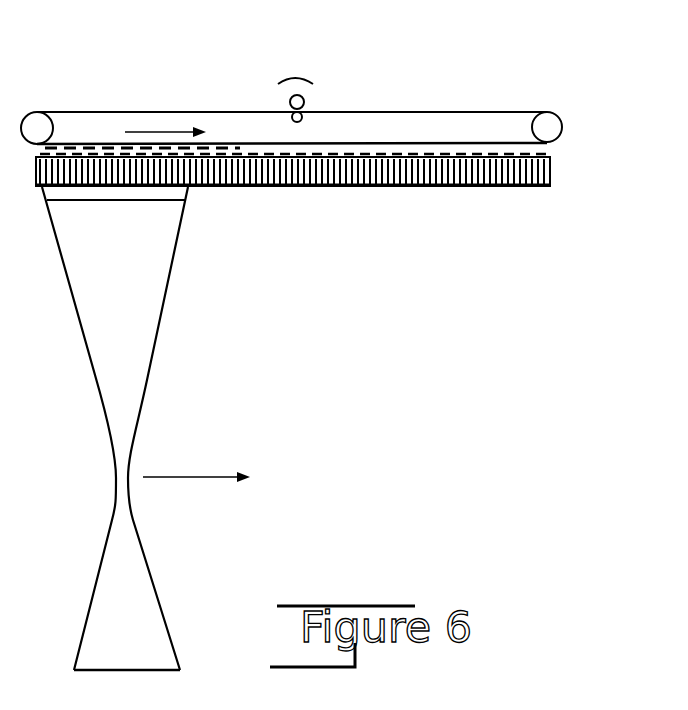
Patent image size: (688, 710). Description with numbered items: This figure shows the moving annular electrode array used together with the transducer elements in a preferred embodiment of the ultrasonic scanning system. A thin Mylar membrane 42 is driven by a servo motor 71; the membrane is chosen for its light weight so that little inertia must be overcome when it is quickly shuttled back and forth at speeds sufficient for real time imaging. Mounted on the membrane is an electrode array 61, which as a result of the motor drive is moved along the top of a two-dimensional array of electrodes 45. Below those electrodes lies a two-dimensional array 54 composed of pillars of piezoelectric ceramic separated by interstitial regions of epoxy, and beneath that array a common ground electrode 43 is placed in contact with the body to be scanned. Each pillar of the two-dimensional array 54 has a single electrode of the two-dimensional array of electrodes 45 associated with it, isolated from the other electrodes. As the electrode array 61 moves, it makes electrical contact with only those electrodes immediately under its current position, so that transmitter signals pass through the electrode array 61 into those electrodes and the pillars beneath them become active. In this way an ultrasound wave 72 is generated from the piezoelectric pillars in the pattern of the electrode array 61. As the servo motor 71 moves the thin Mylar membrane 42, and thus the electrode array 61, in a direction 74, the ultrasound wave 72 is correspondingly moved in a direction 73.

The thin Mylar membrane 42 is at (555, 142).
The common ground electrode 43 is at (548, 187).
The two-dimensional array of electrodes 45 is at (550, 155).
The two-dimensional array 54 is at (180, 169).
The electrode array 61 is at (113, 137).
The servo motor 71 is at (308, 101).
The ultrasound wave 72 is at (160, 583).
The direction 73 is at (203, 483).
The direction 74 is at (172, 131).